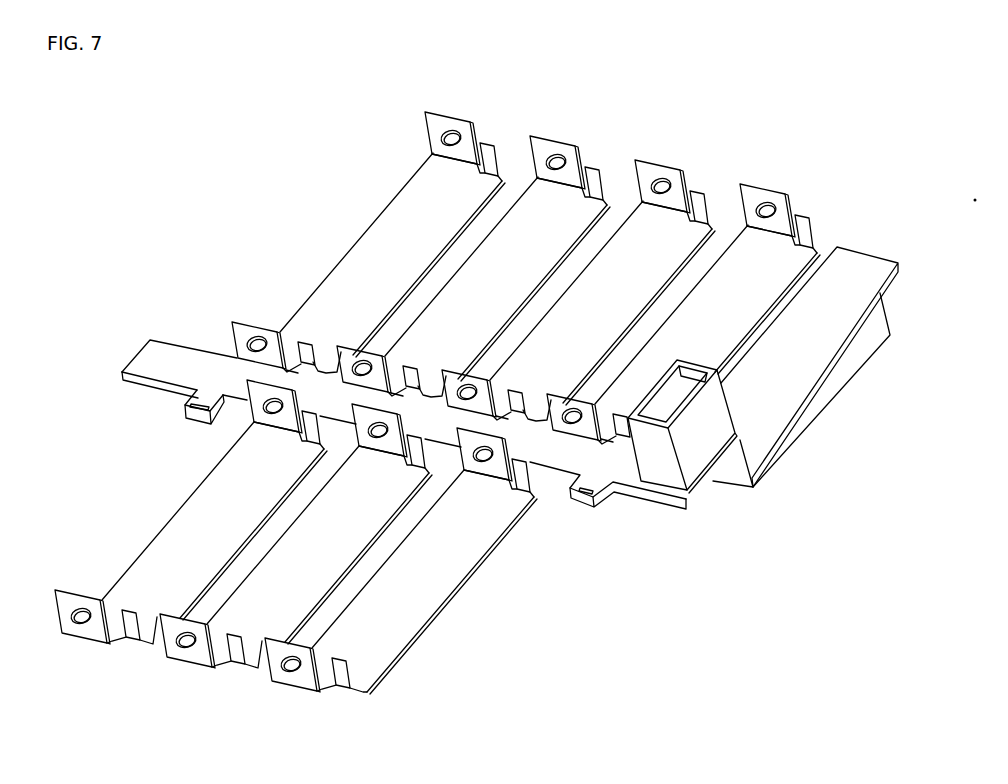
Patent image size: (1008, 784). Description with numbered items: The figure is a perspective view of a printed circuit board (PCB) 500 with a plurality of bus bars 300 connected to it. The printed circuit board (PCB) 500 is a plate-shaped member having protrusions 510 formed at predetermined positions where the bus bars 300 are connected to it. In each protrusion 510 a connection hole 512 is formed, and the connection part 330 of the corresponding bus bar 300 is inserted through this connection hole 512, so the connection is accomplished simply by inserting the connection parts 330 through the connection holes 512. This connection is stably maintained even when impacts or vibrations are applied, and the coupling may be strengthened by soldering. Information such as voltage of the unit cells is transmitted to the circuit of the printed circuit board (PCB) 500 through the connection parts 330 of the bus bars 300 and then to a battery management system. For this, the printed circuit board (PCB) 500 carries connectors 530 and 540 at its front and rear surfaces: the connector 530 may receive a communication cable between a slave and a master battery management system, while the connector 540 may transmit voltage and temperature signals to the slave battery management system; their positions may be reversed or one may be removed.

The bus bar 300 is at (437, 403).
The connection part 330 is at (540, 485).
The printed circuit board (PCB) 500 is at (366, 375).
The protrusion 510 is at (135, 455).
The connection hole 512 is at (187, 406).
The connector 530 is at (688, 470).
The connector 540 is at (778, 434).